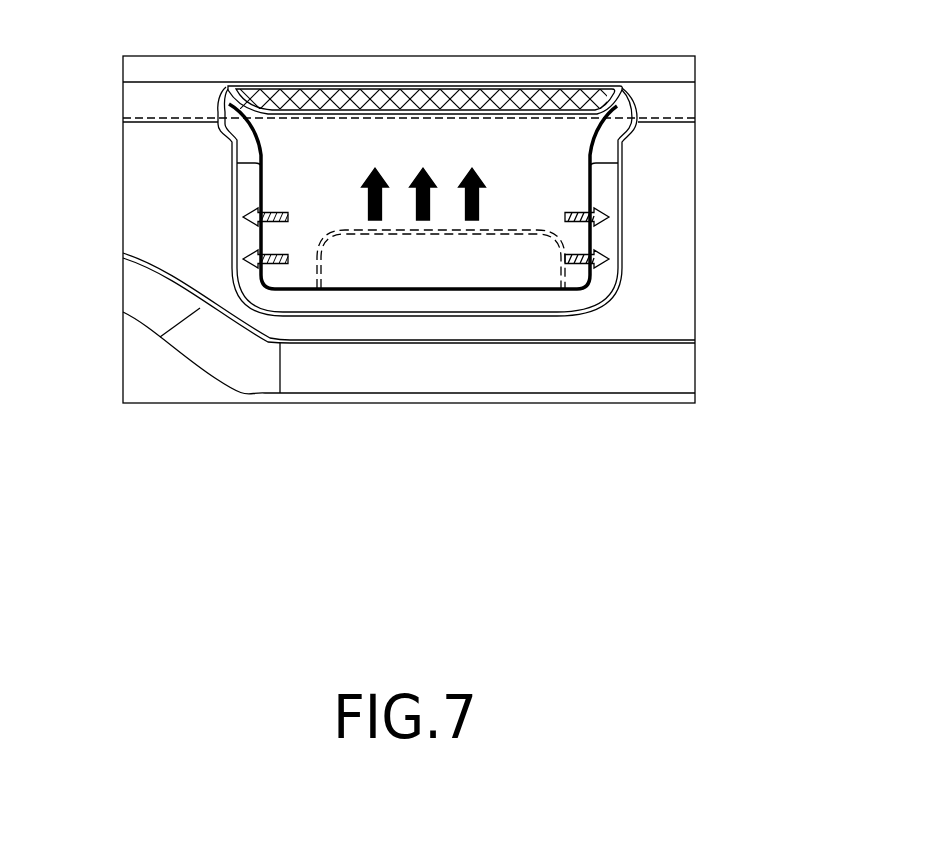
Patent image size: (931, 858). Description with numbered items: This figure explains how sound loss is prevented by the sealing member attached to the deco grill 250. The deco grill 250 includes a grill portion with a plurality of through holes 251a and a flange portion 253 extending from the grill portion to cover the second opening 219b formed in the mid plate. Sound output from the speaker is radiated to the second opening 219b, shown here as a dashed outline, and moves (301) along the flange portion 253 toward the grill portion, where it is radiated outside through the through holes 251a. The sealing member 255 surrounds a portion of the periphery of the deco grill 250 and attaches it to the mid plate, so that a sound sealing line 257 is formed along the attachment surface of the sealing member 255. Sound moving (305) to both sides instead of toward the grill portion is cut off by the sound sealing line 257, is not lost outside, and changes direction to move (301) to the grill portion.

The deco grill 250 is at (610, 87).
The through holes 251a is at (513, 80).
The flange portion 253 is at (570, 158).
The sealing member 255 is at (433, 302).
The sound sealing line 257 is at (317, 291).
The second opening 219b is at (496, 272).
The sound movement toward grill portion 301 is at (410, 184).
The sound movement to both sides 305 is at (612, 266).